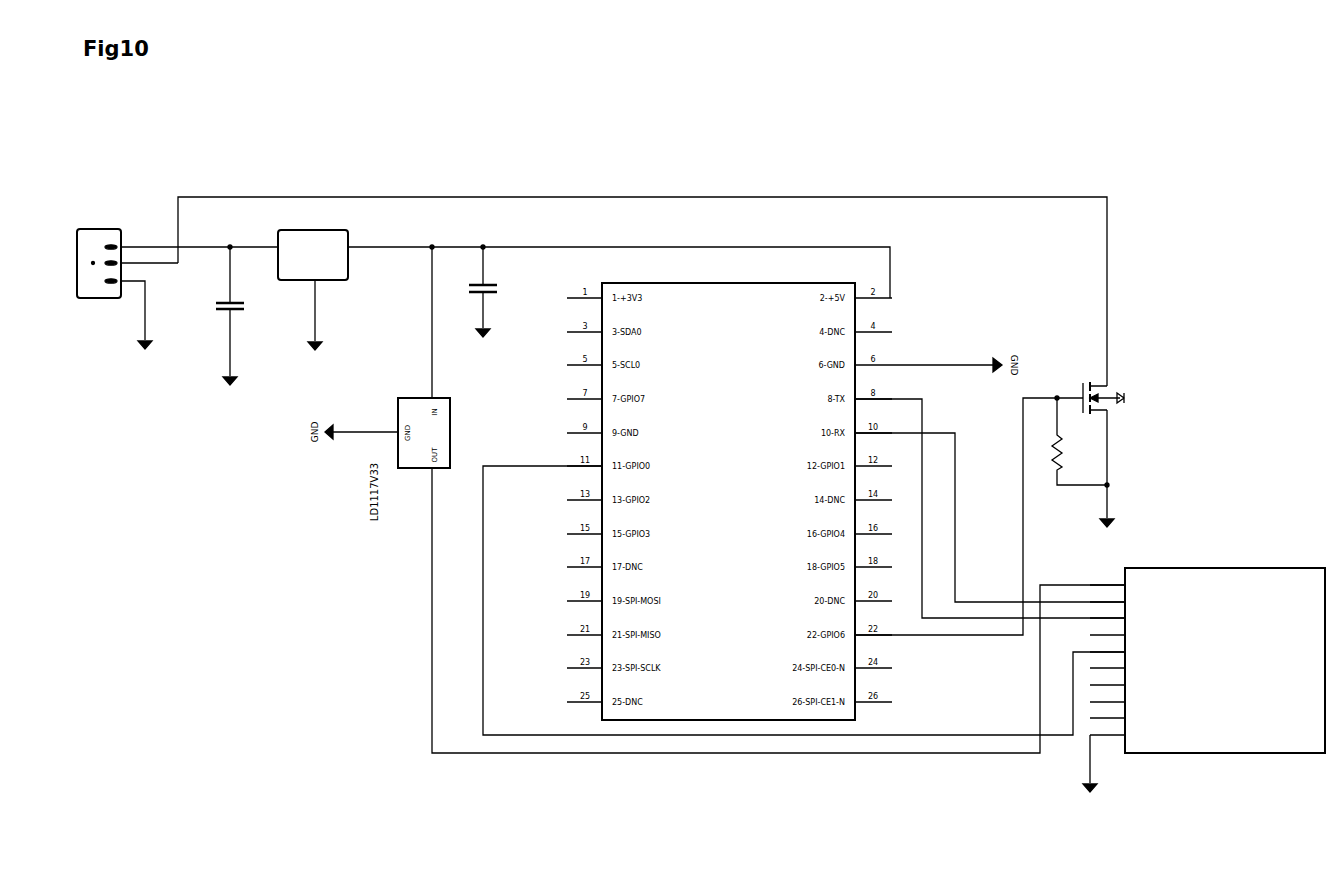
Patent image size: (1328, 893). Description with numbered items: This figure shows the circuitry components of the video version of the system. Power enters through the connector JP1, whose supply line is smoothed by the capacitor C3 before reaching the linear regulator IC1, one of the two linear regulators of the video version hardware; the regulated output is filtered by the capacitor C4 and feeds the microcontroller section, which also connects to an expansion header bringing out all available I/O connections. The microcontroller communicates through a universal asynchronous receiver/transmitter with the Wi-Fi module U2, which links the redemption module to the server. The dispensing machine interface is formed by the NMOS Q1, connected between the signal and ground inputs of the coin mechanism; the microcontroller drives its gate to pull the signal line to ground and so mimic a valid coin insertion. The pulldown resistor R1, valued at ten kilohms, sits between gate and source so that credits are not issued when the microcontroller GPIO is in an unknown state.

The power input jumper connector JP1 is at (127, 289).
The input capacitor C3 is at (240, 323).
The 5V voltage regulator MC7805CTG IC1 is at (337, 297).
The output capacitor C4 is at (493, 299).
The gate pull-down resistor 10K R1 is at (1072, 441).
The MOSFET FQP30N06L Q1 is at (1141, 456).
The RN-XV wireless module U2 is at (1202, 678).